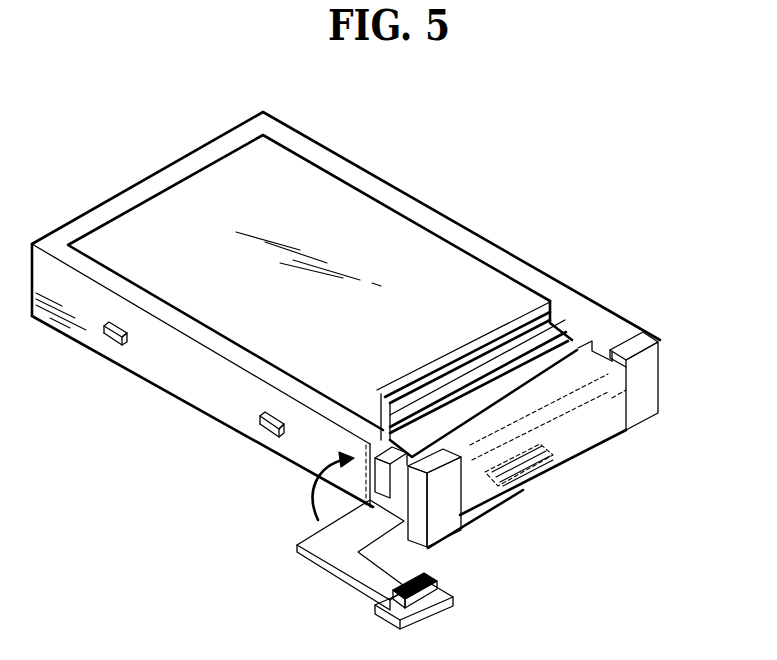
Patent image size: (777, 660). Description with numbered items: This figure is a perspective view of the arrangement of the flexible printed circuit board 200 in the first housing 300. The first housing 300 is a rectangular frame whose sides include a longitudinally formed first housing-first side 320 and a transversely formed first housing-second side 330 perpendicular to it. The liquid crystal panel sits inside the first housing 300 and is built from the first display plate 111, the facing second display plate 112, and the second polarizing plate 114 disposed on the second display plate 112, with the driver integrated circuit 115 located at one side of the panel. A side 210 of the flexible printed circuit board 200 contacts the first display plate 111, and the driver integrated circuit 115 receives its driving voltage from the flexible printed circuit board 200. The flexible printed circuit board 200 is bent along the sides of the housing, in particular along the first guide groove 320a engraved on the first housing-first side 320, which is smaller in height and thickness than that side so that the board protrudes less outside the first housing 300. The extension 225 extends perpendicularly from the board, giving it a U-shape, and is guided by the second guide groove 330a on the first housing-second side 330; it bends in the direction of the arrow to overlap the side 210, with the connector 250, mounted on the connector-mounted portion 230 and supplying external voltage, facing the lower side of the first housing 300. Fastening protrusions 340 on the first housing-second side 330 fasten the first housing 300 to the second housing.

The first housing 300 is at (346, 296).
The second polarizing plate 114 is at (438, 247).
The second display plate 112 is at (518, 335).
The driver integrated circuit 115 is at (575, 340).
The first display plate 111 is at (601, 332).
The flexible printed circuit board 200 is at (521, 461).
The first housing-first side 320 is at (650, 372).
The first guide groove 320a is at (612, 402).
The side of the flexible printed circuit board 210 is at (593, 447).
The second guide groove 330a is at (450, 490).
The extension 225 is at (370, 570).
The connector 250 is at (422, 603).
The connector-mounted portion 230 is at (452, 582).
The fastening protrusions 340 is at (107, 336).
The first housing-second side 330 is at (333, 411).